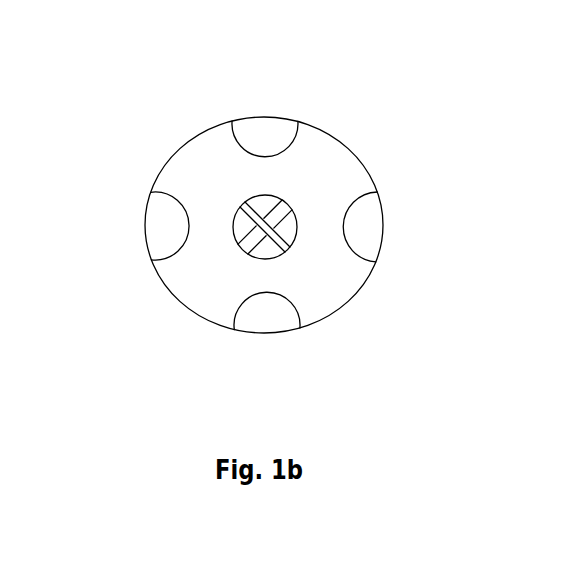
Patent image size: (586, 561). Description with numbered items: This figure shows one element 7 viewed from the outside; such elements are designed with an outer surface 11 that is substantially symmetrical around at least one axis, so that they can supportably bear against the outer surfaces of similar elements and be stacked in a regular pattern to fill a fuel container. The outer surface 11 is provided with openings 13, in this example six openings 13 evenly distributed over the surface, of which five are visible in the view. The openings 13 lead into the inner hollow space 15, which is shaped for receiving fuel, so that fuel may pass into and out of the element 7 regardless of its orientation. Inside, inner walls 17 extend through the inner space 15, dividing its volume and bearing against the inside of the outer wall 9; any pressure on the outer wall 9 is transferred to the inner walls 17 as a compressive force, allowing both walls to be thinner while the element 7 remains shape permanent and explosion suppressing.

The element 7 is at (297, 290).
The outer wall 9 is at (322, 183).
The outer surface 11 is at (212, 147).
The openings 13 is at (253, 244).
The inner space 15 is at (245, 225).
The inner walls 17 is at (273, 233).